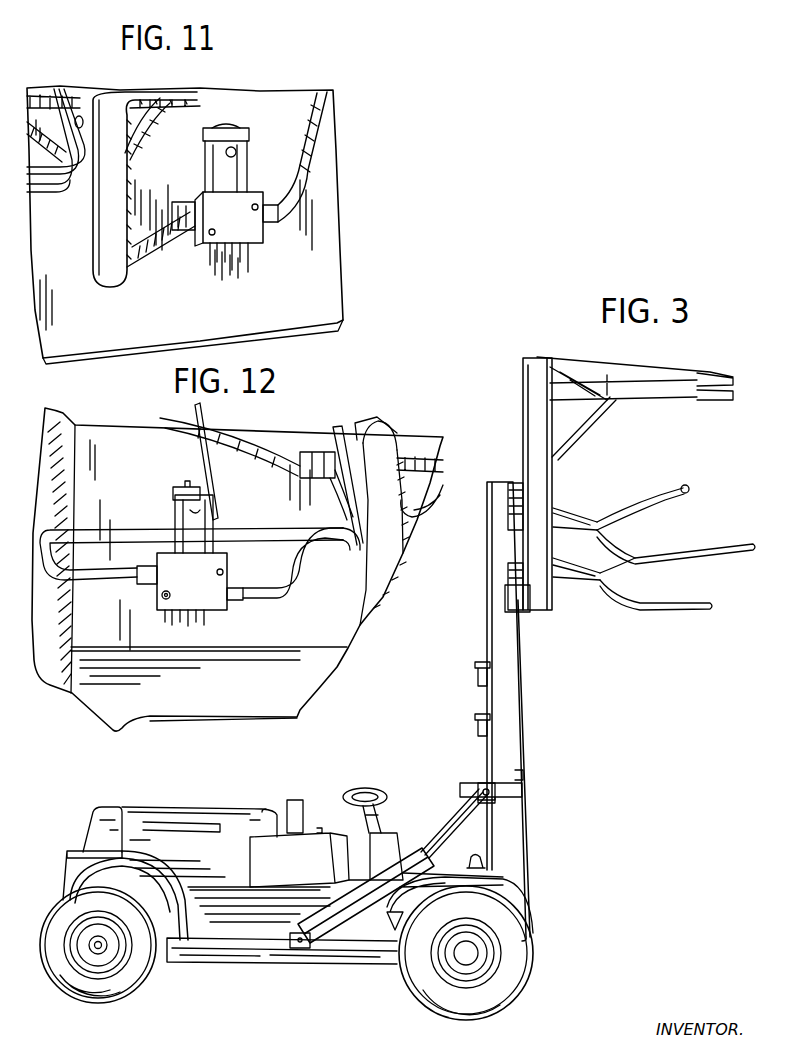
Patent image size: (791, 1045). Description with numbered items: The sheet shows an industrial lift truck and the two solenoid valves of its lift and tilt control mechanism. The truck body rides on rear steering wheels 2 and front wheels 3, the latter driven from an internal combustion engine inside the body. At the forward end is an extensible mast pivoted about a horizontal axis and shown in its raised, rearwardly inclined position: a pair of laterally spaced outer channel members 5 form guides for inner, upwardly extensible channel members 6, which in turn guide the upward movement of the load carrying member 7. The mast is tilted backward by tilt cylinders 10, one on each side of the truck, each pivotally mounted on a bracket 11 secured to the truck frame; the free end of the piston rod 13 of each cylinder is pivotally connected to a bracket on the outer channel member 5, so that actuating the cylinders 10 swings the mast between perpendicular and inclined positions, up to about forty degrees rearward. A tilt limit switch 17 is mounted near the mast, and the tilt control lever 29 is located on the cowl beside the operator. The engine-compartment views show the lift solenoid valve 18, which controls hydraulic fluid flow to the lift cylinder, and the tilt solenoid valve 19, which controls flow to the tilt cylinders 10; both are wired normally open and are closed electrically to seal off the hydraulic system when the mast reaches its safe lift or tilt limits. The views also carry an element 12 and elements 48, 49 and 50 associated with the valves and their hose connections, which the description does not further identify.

In FIG. 3, the rear steering wheels 2 is at (137, 977).
In FIG. 3, the front wheels 3 is at (427, 993).
In FIG. 3, the outer channel members 5 is at (508, 737).
In FIG. 3, the inner channel members 6 is at (513, 635).
In FIG. 3, the load carrying member 7 is at (655, 380).
In FIG. 3, the tilt cylinders 10 is at (323, 920).
In FIG. 3, the bracket 11 is at (297, 945).
In FIG. 3, the frame side sill 12 is at (218, 953).
In FIG. 3, the piston rod 13 is at (458, 810).
In FIG. 3, the tilt limit switch 17 is at (477, 858).
In FIG. 3, the tilt control lever 29 is at (377, 813).
In FIG. 11, the lift solenoid valve 18 is at (245, 237).
In FIG. 12, the tilt solenoid valve 19 is at (207, 600).
In FIG. 11, the hydraulic hose 48 is at (100, 228).
In FIG. 12, the hydraulic hose 48 is at (392, 465).
In FIG. 12, the return tube 49 is at (295, 590).
In FIG. 11, the hose fitting 50 is at (84, 198).
In FIG. 12, the hose fitting 50 is at (360, 552).